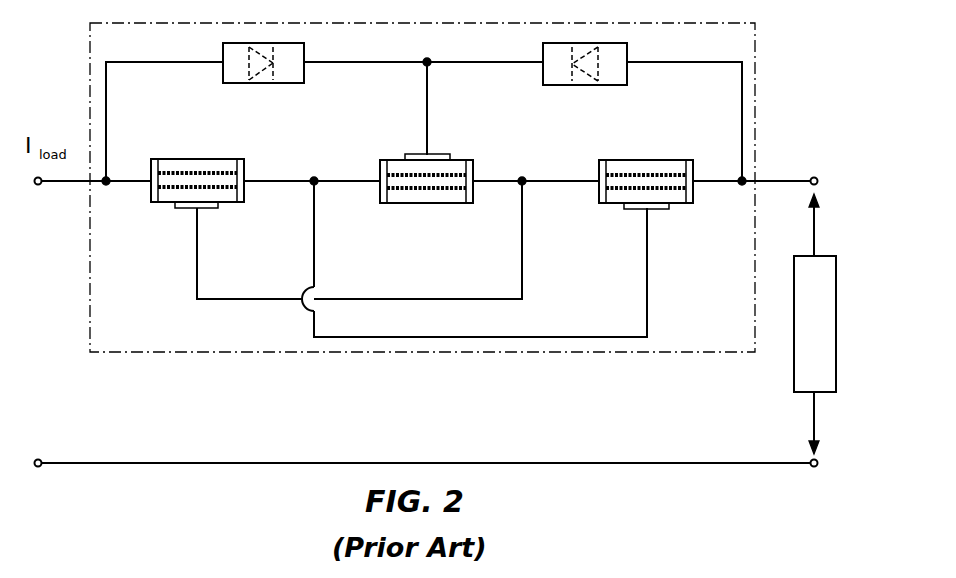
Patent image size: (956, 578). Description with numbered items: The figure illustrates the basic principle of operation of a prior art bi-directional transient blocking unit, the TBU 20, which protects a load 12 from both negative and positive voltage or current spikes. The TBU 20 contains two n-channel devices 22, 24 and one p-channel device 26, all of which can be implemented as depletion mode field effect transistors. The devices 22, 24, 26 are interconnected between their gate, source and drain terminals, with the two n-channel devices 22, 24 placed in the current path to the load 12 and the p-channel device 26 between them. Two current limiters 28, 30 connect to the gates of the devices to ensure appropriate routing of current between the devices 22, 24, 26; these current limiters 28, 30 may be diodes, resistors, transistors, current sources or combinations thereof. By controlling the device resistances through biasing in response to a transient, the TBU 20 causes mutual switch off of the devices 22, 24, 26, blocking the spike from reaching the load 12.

The load 12 is at (794, 368).
The bi-directional TBU 20 is at (755, 93).
The n-channel device 22 is at (200, 159).
The n-channel device 24 is at (658, 160).
The p-channel device 26 is at (428, 203).
The current limiter 28 is at (304, 83).
The current limiter 30 is at (543, 83).